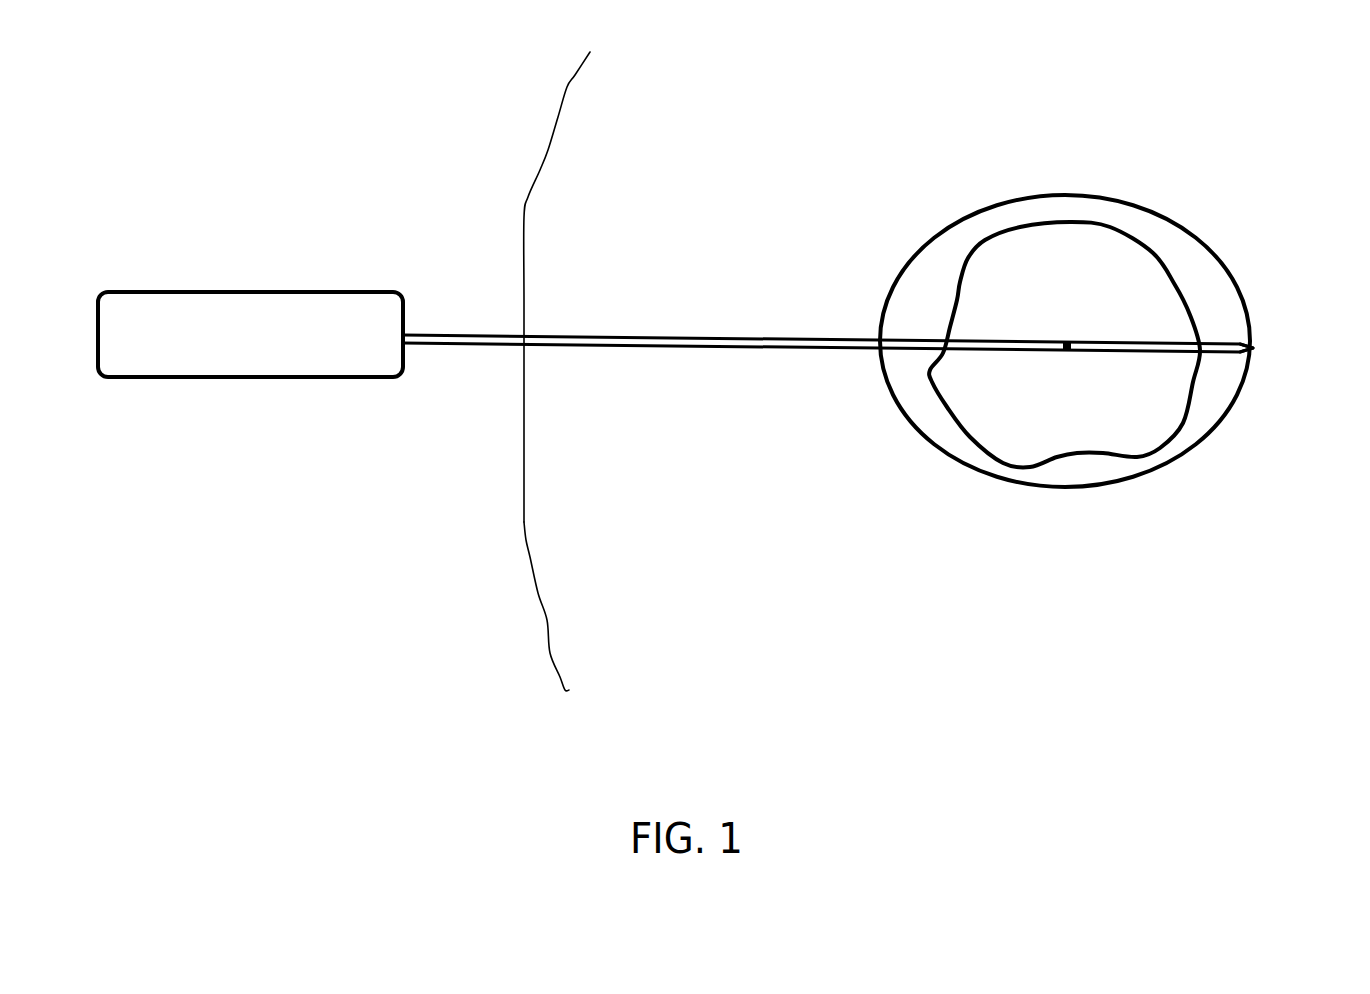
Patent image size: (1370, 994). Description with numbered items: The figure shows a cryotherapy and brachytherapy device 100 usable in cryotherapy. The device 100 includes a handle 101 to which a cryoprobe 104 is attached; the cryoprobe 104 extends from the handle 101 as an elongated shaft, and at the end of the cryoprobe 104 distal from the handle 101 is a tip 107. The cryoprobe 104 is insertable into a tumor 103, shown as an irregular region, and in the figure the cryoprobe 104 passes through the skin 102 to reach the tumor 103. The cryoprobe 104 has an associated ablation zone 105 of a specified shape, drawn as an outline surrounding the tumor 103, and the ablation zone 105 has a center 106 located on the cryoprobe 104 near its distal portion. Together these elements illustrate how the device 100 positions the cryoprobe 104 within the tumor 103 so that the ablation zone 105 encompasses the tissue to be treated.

The cryotherapy and brachytherapy device 100 is at (400, 435).
The handle 101 is at (243, 297).
The skin 102 is at (525, 540).
The tumor 103 is at (958, 282).
The cryoprobe 104 is at (588, 347).
The ablation zone 105 is at (950, 220).
The center 106 is at (1067, 347).
The tip 107 is at (1250, 348).